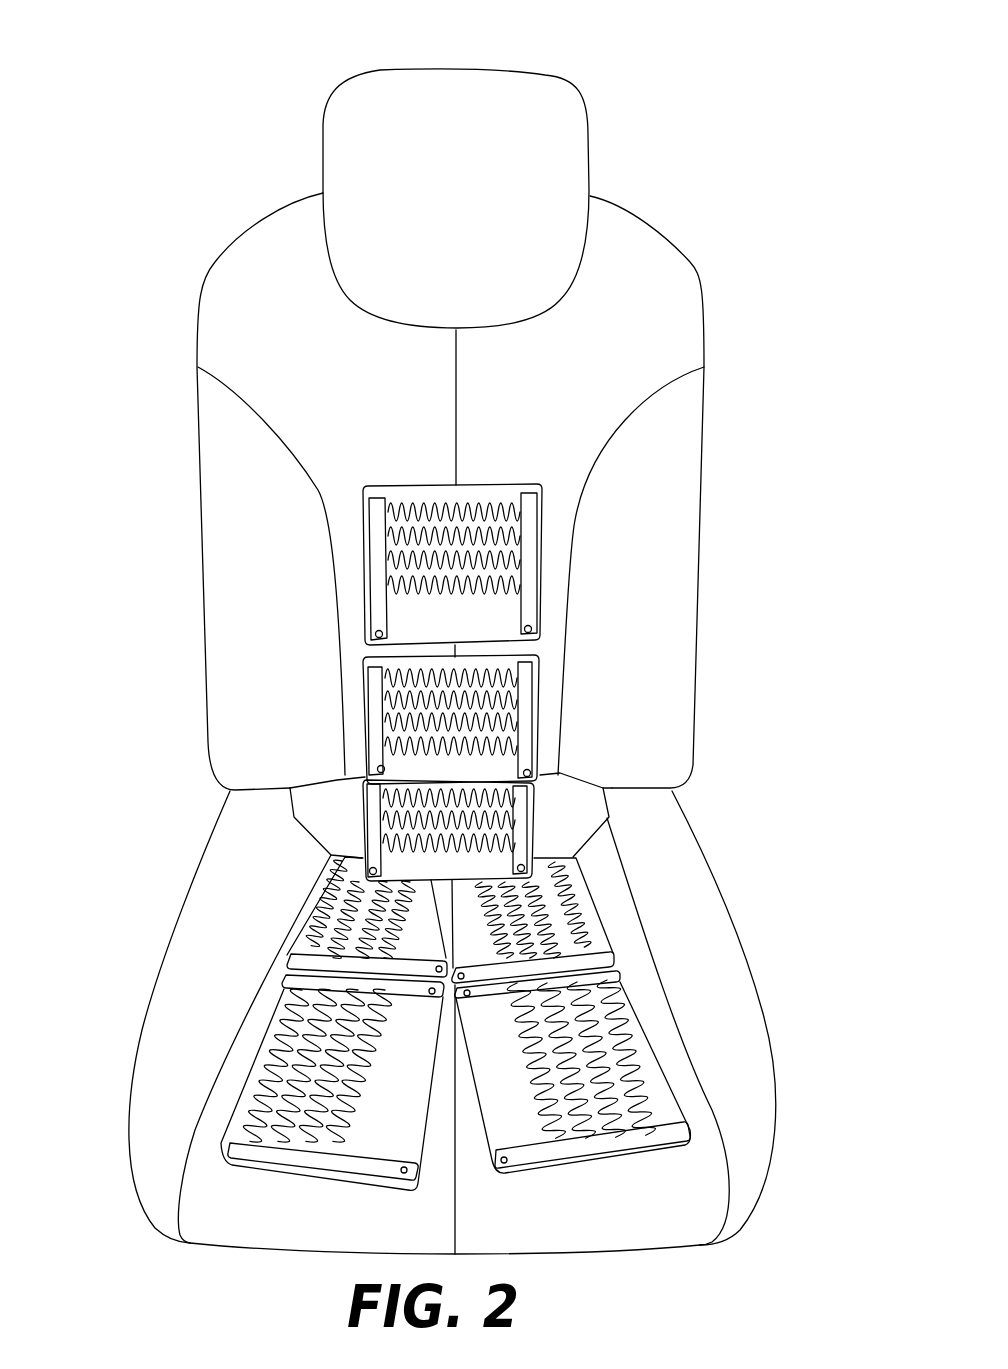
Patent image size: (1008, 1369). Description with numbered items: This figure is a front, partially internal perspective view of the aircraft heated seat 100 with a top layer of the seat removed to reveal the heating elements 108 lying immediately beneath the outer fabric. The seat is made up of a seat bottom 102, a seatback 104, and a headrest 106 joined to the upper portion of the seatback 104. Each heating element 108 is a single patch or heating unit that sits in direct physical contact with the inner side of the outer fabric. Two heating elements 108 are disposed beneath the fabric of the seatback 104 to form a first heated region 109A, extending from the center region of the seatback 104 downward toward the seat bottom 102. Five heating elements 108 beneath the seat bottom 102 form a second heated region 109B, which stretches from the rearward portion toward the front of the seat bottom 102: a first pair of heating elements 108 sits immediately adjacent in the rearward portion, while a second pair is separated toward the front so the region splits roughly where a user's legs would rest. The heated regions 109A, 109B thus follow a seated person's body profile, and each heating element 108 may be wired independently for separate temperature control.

The aircraft heated seat 100 is at (126, 203).
The seat bottom 102 is at (220, 895).
The seatback 104 is at (352, 373).
The headrest 106 is at (448, 157).
The heating element 108 is at (487, 837).
The first heated region 109A is at (605, 540).
The second heated region 109B is at (692, 940).